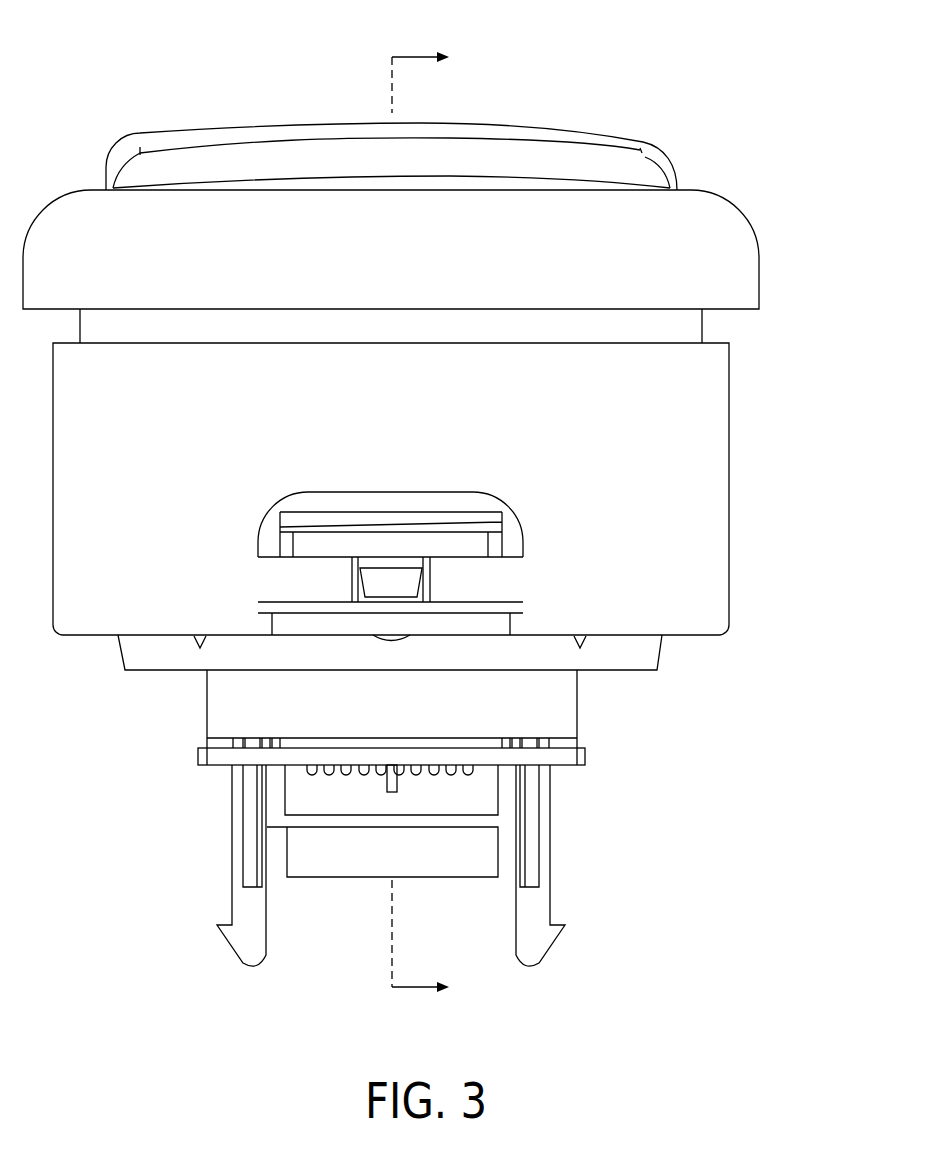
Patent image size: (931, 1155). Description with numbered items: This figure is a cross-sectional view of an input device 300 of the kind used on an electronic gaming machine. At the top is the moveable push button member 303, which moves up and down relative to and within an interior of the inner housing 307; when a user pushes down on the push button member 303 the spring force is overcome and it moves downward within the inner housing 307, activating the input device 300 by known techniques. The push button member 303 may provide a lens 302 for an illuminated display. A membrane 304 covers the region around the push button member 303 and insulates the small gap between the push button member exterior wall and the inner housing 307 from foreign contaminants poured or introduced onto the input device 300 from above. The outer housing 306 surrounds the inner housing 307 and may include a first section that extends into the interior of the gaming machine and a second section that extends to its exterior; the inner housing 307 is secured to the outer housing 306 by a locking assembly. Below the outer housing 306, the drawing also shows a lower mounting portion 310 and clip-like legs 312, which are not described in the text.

The input device 300 is at (244, 72).
The lens 302 is at (645, 170).
The push button member 303 is at (596, 143).
The membrane 304 is at (707, 227).
The outer housing 306 is at (697, 412).
The inner housing 307 is at (500, 582).
The mounting base 310 is at (548, 705).
The mounting clips 312 is at (535, 912).